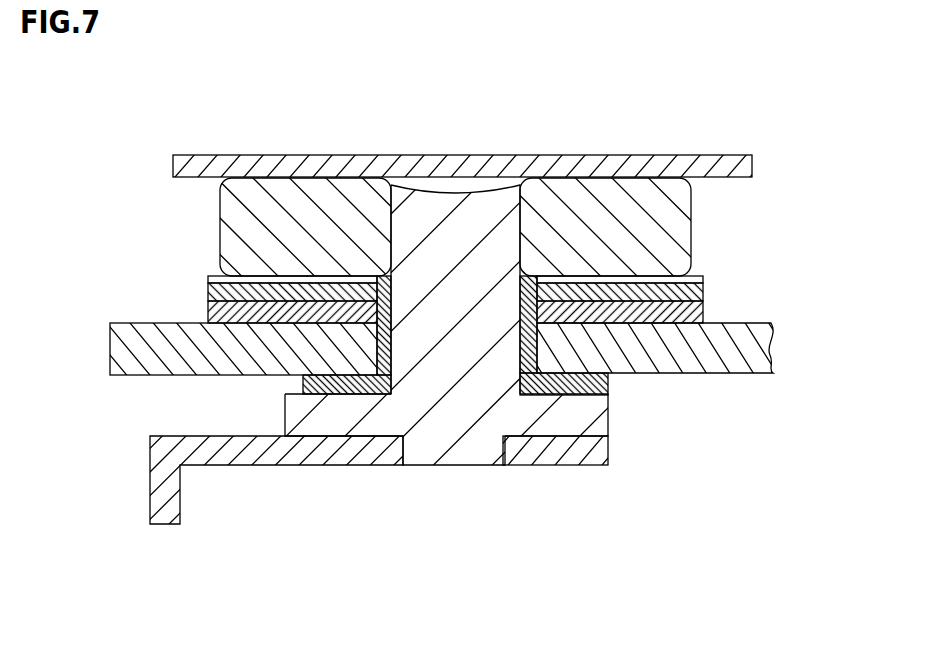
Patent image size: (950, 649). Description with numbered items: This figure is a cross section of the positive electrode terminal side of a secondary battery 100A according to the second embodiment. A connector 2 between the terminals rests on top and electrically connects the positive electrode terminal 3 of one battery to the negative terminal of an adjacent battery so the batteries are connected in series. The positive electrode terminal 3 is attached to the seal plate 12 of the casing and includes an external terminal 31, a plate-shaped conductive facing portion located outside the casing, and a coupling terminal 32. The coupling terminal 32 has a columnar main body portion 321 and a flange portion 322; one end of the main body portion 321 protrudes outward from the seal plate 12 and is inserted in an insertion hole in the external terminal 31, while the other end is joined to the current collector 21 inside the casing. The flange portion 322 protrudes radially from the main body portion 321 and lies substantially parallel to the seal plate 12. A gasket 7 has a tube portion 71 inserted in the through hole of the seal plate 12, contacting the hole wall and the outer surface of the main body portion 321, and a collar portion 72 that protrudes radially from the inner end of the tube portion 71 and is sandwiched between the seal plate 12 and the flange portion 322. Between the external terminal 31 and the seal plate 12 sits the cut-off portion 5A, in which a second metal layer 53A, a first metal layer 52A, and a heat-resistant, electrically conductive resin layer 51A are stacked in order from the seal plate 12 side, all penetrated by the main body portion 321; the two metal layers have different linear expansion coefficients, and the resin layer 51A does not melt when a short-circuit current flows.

The secondary battery 100A is at (795, 93).
The connector between the terminals 2 is at (243, 167).
The positive electrode terminal 3 is at (445, 118).
The external terminal 31 is at (343, 215).
The coupling terminal 32 is at (485, 336).
The main body portion 321 is at (430, 427).
The flange portion 322 is at (358, 425).
The cut-off portion 5A is at (126, 177).
The resin layer 51A is at (317, 277).
The first metal layer 52A is at (270, 297).
The second metal layer 53A is at (243, 313).
The seal plate 12 is at (130, 360).
The gasket 7 is at (667, 582).
The tube portion 71 is at (528, 348).
The collar portion 72 is at (566, 386).
The current collector 21 is at (150, 448).